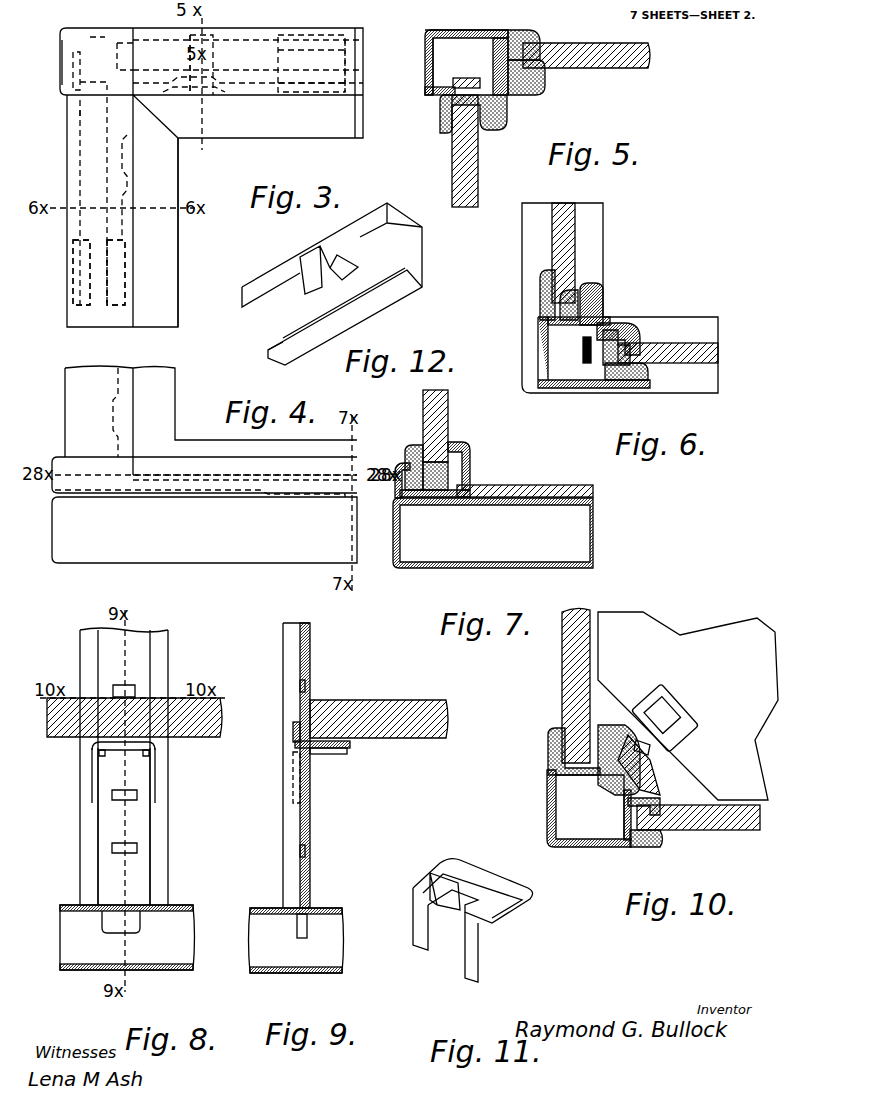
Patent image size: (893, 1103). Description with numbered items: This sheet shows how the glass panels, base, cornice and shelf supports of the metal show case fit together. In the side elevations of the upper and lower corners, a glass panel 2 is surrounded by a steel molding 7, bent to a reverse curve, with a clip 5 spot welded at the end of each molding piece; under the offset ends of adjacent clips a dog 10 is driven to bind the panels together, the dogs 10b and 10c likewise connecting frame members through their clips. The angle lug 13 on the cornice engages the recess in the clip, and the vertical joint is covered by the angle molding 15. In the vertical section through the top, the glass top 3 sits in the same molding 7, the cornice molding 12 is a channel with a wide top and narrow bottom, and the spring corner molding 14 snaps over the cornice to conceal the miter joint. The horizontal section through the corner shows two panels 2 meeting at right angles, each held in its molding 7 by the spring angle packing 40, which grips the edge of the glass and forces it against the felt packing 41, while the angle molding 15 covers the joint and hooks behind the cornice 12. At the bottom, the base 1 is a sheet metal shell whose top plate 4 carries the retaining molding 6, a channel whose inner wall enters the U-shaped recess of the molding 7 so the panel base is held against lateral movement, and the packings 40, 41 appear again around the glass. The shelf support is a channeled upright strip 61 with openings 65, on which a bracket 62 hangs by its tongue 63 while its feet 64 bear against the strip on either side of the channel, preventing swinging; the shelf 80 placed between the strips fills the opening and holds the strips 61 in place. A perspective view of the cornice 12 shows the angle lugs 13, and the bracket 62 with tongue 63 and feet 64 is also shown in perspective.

In FIG. 4, the base section 1 is at (52, 525).
In FIG. 7, the base section 1 is at (393, 533).
In FIG. 5, the glass panel 2 is at (478, 190).
In FIG. 6, the glass panel 2 is at (578, 225).
In FIG. 7, the glass panel 2 is at (435, 426).
In FIG. 10, the glass panel 2 is at (562, 648).
In FIG. 5, the glass top 3 is at (650, 68).
In FIG. 7, the top plate 4 is at (595, 500).
In FIG. 8, the top plate 4 is at (195, 910).
In FIG. 9, the top plate 4 is at (342, 914).
In FIG. 3, the clip 5 is at (90, 115).
In FIG. 4, the clip 5 is at (255, 488).
In FIG. 4, the retaining molding 6 is at (62, 462).
In FIG. 7, the retaining molding 6 is at (470, 480).
In FIG. 3, the molding 7 is at (363, 121).
In FIG. 5, the molding 7 is at (440, 114).
In FIG. 6, the molding 7 is at (605, 287).
In FIG. 7, the molding 7 is at (470, 448).
In FIG. 3, the dog 10 is at (75, 288).
In FIG. 3, the dog 10b is at (345, 60).
In FIG. 5, the dog 10b is at (407, 66).
In FIG. 3, the dog 10c is at (105, 36).
In FIG. 3, the cornice molding 12 is at (355, 86).
In FIG. 12, the cornice molding 12 is at (425, 256).
In FIG. 5, the cornice molding 12 is at (425, 80).
In FIG. 3, the angle lug 13 is at (213, 50).
In FIG. 12, the angle lug 13 is at (300, 266).
In FIG. 3, the corner molding 14 is at (62, 58).
In FIG. 5, the corner molding 14 is at (425, 42).
In FIG. 3, the molding 15 is at (72, 252).
In FIG. 6, the molding 15 is at (553, 392).
In FIG. 10, the molding 15 is at (598, 848).
In FIG. 5, the spring angle packing 40 is at (482, 122).
In FIG. 6, the spring angle packing 40 is at (576, 292).
In FIG. 7, the spring angle packing 40 is at (450, 462).
In FIG. 10, the spring angle packing 40 is at (597, 742).
In FIG. 5, the felt packing 41 is at (446, 130).
In FIG. 6, the felt packing 41 is at (538, 290).
In FIG. 7, the felt packing 41 is at (418, 446).
In FIG. 10, the felt packing 41 is at (554, 748).
In FIG. 8, the supporting strip 61 is at (158, 838).
In FIG. 9, the supporting strip 61 is at (292, 829).
In FIG. 10, the supporting strip 61 is at (612, 725).
In FIG. 8, the bracket 62 is at (160, 742).
In FIG. 9, the bracket 62 is at (305, 800).
In FIG. 11, the bracket 62 is at (540, 918).
In FIG. 9, the tongue 63 is at (295, 733).
In FIG. 11, the tongue 63 is at (448, 868).
In FIG. 8, the feet 64 is at (92, 774).
In FIG. 10, the feet 64 is at (672, 766).
In FIG. 11, the feet 64 is at (412, 897).
In FIG. 8, the openings 65 is at (140, 795).
In FIG. 9, the openings 65 is at (308, 690).
In FIG. 10, the openings 65 is at (638, 759).
In FIG. 8, the shelf 80 is at (212, 738).
In FIG. 9, the shelf 80 is at (450, 712).
In FIG. 10, the shelf 80 is at (712, 625).